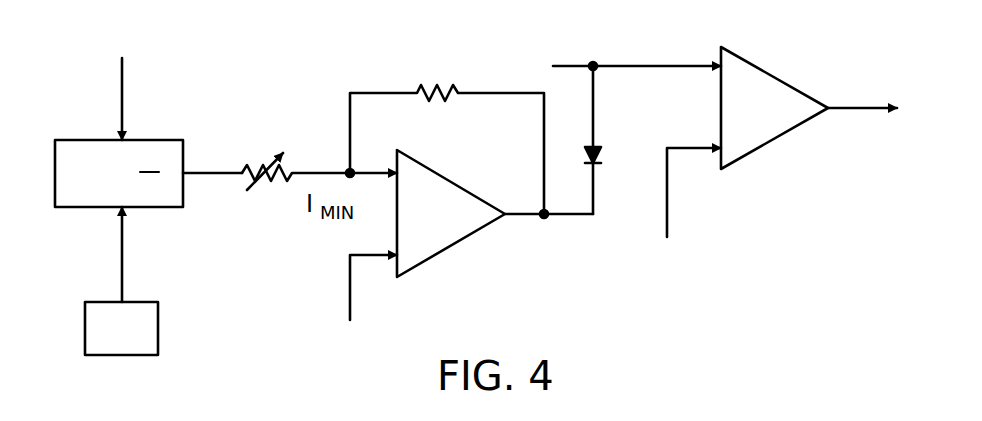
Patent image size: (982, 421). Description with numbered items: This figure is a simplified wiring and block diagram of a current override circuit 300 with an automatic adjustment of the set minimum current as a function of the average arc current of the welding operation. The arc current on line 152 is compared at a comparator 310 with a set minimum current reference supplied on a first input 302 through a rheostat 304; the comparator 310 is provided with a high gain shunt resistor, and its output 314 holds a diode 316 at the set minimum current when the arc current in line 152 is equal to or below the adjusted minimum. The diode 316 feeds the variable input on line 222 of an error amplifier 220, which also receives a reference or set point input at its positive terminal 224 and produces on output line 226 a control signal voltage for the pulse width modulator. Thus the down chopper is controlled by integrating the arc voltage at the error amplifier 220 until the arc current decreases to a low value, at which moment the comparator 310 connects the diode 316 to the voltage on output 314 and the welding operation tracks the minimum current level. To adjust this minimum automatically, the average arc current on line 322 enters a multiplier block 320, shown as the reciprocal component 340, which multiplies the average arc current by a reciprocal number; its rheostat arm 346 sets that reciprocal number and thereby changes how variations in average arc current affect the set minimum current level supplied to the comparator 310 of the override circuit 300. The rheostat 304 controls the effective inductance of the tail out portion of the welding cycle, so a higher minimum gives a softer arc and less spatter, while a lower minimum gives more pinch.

The multiplier circuit (Iave · 1/X) 320 is at (155, 120).
The average arc current line 322 is at (121, 106).
The reciprocal multiplier component 340 is at (150, 207).
The rheostat arm 346 is at (158, 330).
The first input 302 is at (220, 173).
The rheostat 304 is at (278, 178).
The comparator 310 is at (440, 173).
The current override circuit 300 is at (457, 258).
The arc current input line 152 is at (350, 304).
The comparator output 314 is at (565, 214).
The diode 316 is at (600, 148).
The variable input line 222 is at (623, 64).
The error amplifier 220 is at (768, 72).
The positive terminal 224 is at (718, 157).
The output line 226 is at (848, 108).